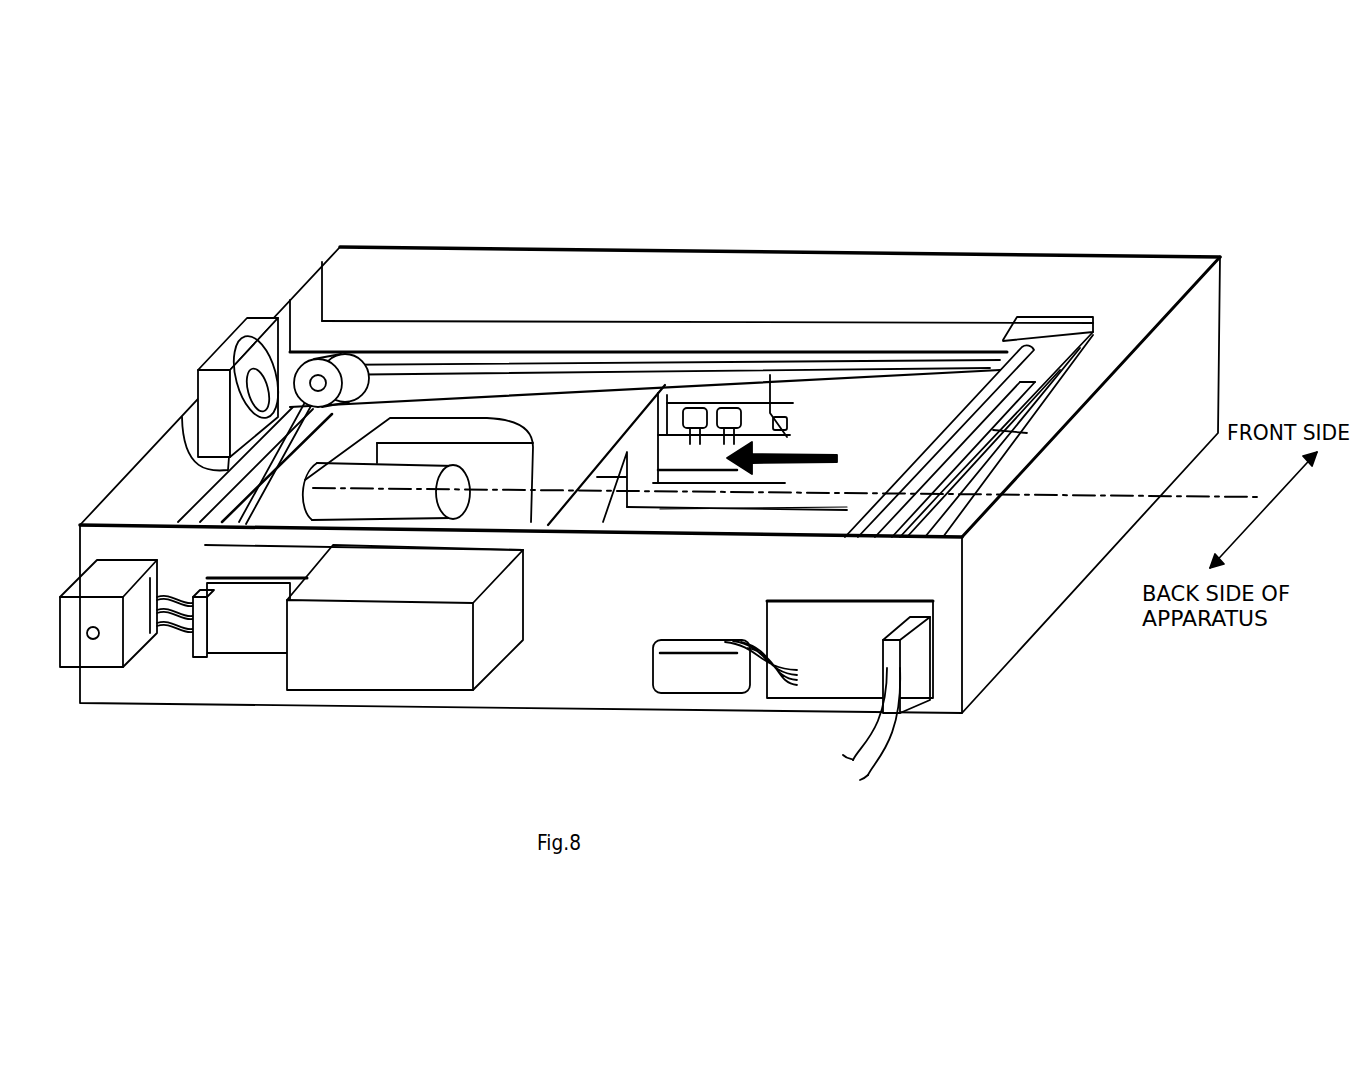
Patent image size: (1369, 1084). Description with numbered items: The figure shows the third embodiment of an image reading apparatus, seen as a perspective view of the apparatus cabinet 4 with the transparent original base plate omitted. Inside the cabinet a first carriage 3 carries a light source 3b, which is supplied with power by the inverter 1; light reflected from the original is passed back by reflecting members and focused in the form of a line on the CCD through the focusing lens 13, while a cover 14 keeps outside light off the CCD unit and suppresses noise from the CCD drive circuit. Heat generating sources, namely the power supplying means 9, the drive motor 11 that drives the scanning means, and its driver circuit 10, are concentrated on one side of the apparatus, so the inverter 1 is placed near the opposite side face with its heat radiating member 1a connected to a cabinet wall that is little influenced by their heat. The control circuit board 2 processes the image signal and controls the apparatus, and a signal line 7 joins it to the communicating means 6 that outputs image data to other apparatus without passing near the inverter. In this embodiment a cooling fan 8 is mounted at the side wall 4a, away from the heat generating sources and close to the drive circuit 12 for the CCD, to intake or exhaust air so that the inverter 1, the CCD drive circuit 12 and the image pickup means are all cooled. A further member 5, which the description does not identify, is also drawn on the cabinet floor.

The inverter 1 is at (680, 463).
The heat radiating member 1a is at (760, 413).
The control circuit board 2 is at (683, 513).
The first carriage 3 is at (1047, 337).
The light source 3b is at (1020, 318).
The chassis 4 is at (1060, 497).
The side wall 4a is at (313, 302).
The guide rail assembly 5 is at (980, 507).
The communicating means 6 is at (927, 713).
The signal line 7 is at (740, 693).
The cooling fan 8 is at (213, 413).
The power supplying means 9 is at (407, 640).
The driver circuit 10 is at (257, 623).
The drive motor 11 is at (77, 633).
The drive circuit 12 is at (280, 515).
The focusing lens 13 is at (294, 398).
The cover 14 is at (577, 452).